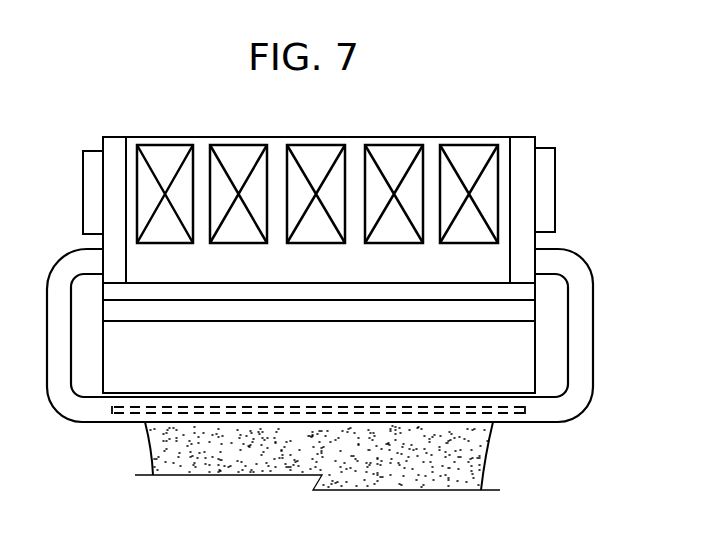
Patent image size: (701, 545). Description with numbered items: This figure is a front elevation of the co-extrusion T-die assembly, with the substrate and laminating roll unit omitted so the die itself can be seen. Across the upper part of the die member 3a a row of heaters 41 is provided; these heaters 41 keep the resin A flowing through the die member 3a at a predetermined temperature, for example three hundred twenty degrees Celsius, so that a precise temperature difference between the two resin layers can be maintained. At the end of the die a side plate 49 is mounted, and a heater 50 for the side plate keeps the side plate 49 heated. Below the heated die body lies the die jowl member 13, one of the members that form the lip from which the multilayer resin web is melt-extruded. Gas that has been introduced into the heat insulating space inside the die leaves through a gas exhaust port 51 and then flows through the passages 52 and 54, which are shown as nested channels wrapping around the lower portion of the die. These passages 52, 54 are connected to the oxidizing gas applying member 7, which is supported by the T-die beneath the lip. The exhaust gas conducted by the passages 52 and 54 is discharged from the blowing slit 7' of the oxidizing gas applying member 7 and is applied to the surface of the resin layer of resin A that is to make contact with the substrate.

The side plate 49 is at (117, 146).
The heaters 41 is at (170, 157).
The die member 3a is at (317, 262).
The heater for the side plate 50 is at (83, 175).
The gas exhaust port 51 is at (103, 263).
The passage 52 is at (47, 292).
The passage 54 is at (587, 305).
The die jowl member 13 is at (152, 350).
The oxidizing gas applying member 7 is at (317, 471).
The blowing slit 7' is at (266, 464).